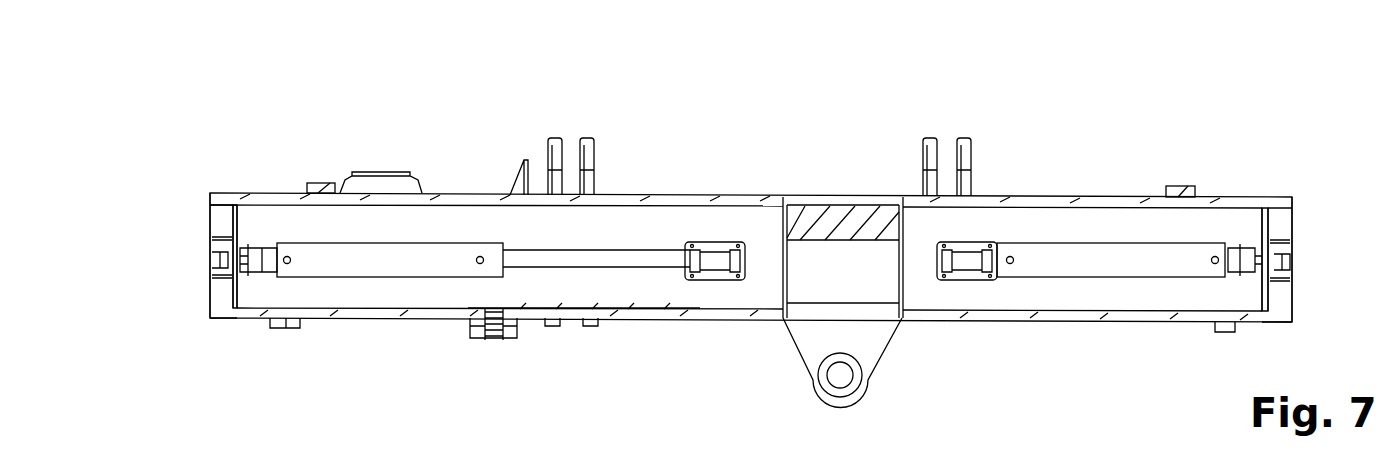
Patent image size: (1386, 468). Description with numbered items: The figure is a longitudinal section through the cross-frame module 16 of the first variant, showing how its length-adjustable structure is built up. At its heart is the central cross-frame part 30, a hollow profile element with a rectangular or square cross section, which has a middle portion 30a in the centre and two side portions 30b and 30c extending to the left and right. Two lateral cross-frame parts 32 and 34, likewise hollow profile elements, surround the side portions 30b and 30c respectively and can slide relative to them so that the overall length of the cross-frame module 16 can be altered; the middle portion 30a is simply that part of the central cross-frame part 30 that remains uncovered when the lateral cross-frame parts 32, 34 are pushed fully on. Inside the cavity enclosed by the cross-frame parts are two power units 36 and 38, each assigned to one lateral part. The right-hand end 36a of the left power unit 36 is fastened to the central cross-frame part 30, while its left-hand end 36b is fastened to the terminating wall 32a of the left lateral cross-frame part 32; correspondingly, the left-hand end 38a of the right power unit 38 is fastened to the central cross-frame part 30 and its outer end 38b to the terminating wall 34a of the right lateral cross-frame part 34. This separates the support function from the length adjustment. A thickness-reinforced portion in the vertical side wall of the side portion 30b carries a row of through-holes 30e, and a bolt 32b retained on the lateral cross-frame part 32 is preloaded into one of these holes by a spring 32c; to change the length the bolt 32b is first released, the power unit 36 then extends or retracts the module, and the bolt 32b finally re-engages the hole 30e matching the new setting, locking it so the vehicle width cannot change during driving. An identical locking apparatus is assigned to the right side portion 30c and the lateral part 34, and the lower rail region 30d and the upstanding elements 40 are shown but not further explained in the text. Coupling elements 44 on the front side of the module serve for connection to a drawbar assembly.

The cross-frame module 16 is at (253, 112).
The central cross-frame part 30 is at (818, 200).
The middle portion 30a is at (855, 225).
The side portion 30b is at (662, 200).
The side portion 30c is at (1100, 205).
The lower rail 30d is at (630, 318).
The through-holes 30e is at (586, 318).
The lateral cross-frame part 32 is at (333, 318).
The terminating wall 32a is at (232, 211).
The bolt 32b is at (500, 340).
The spring 32c is at (492, 338).
The lateral cross-frame part 34 is at (1228, 320).
The terminating wall 34a is at (1268, 222).
The power unit 36 is at (405, 262).
The right-hand end of power unit 36a is at (715, 262).
The left-hand end of power unit 36b is at (255, 272).
The power unit 38 is at (1108, 262).
The left-hand end of power unit 38a is at (970, 262).
The right actuator outer mount nut 38b is at (1250, 262).
The guide posts 40 is at (553, 155).
The coupling elements 44 is at (812, 356).